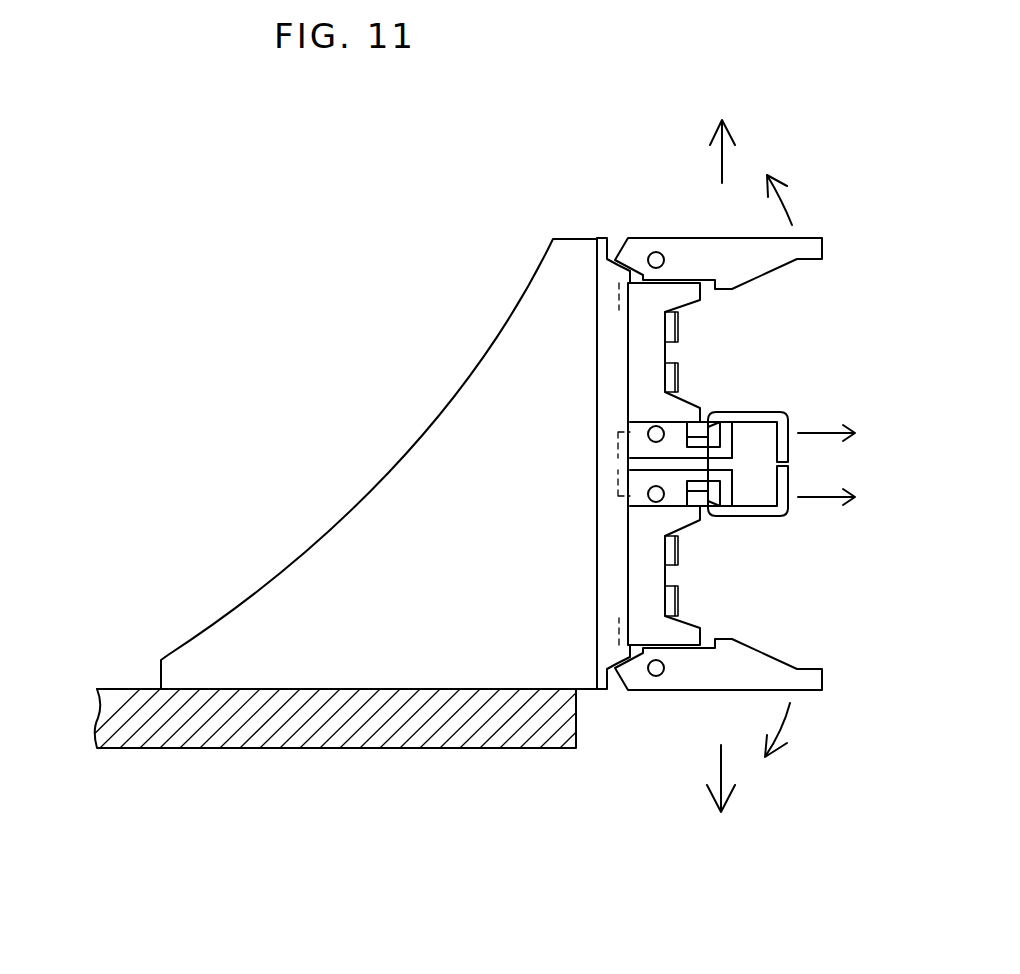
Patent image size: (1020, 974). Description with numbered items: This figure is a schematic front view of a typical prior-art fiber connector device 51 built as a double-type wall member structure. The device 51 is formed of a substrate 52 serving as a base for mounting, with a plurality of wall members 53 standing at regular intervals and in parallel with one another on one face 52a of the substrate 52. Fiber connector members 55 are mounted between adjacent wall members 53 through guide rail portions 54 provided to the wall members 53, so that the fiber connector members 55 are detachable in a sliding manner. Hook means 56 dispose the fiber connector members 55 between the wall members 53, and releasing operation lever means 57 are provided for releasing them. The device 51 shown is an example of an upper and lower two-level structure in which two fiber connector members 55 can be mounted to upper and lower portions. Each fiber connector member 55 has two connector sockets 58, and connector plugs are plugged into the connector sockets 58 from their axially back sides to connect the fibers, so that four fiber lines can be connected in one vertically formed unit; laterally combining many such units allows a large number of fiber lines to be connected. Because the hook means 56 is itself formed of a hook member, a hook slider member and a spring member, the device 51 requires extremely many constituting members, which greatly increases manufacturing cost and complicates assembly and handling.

The fiber connector device 51 is at (250, 458).
The substrate 52 is at (232, 735).
The one face of the substrate 52a is at (127, 689).
The wall member 53 is at (458, 420).
The guide rail portion 54 is at (608, 265).
The fiber connector member 55 is at (677, 297).
The hook means 56 is at (757, 417).
The releasing operation lever means 57 is at (692, 255).
The connector socket 58 is at (678, 330).